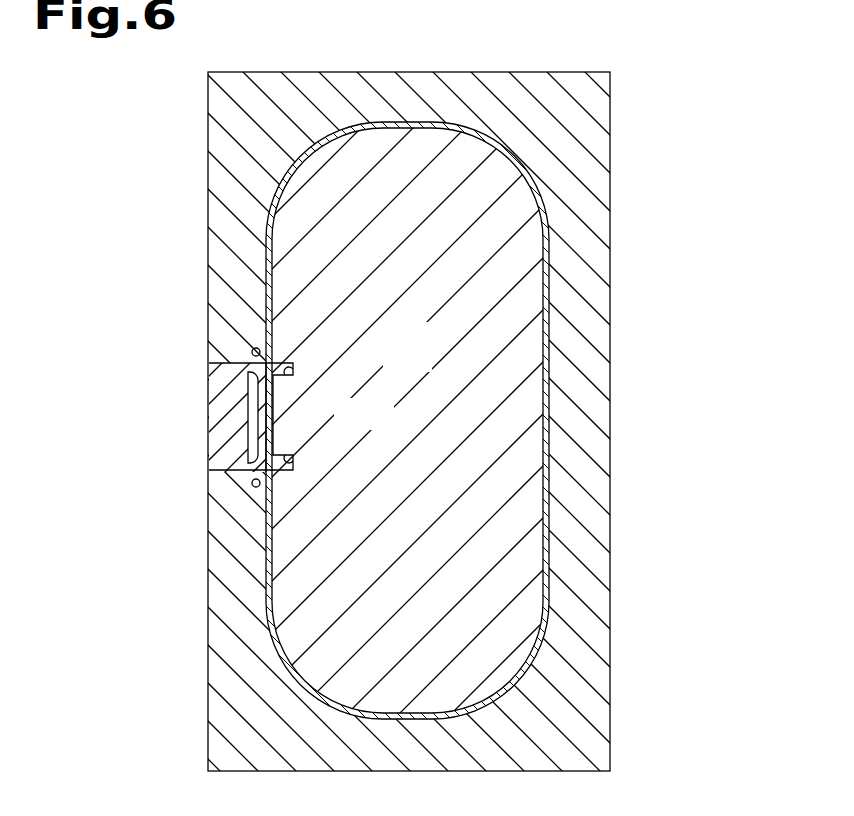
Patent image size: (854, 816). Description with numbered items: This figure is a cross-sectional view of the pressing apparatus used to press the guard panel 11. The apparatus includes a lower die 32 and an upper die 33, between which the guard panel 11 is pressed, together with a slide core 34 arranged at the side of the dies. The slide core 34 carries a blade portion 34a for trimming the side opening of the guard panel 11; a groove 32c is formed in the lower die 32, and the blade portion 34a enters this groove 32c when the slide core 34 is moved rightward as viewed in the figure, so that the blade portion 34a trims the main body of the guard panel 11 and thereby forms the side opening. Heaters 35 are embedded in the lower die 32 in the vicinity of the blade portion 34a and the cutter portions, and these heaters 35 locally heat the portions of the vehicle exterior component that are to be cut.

The guard panel 11 is at (546, 285).
The lower die 32 is at (424, 364).
The groove 32c is at (291, 368).
The upper die 33 is at (598, 368).
The slide core 34 is at (222, 420).
The blade portion 34a is at (248, 385).
The heaters 35 is at (253, 348).